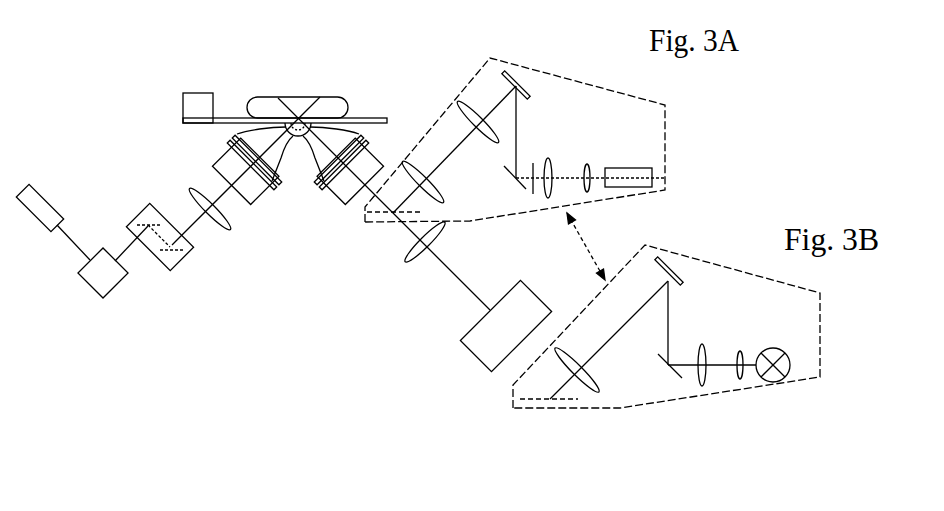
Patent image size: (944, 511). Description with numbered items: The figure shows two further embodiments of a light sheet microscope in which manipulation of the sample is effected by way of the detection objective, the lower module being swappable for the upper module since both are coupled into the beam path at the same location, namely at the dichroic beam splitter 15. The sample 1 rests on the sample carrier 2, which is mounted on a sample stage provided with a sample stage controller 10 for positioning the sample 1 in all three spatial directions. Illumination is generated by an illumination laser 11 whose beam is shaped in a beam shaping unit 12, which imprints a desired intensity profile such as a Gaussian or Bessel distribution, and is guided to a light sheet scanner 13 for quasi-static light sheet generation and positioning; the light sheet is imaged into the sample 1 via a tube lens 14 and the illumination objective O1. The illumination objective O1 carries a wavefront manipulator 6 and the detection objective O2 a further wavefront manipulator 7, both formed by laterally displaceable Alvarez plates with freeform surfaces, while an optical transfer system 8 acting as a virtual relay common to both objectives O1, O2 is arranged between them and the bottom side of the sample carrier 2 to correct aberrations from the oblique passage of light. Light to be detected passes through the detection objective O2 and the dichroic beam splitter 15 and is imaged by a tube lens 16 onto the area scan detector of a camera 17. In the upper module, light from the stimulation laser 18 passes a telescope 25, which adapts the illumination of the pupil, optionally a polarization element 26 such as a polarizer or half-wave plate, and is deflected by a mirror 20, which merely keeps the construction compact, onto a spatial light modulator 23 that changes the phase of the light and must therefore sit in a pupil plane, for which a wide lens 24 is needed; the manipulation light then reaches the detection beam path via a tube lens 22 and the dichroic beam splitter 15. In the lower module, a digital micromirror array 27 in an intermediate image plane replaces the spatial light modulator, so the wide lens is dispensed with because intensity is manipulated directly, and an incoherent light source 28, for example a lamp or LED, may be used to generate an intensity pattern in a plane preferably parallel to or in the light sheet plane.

In FIG. 3A, the sample 1 is at (326, 100).
In FIG. 3A, the sample carrier 2 is at (372, 118).
In FIG. 3A, the wavefront manipulator 6 is at (233, 144).
In FIG. 3A, the further wavefront manipulator 7 is at (340, 168).
In FIG. 3A, the optical transfer system 8 is at (298, 134).
In FIG. 3A, the sample stage controller 10 is at (200, 93).
In FIG. 3A, the illumination laser 11 is at (40, 200).
In FIG. 3A, the beam shaping unit 12 is at (110, 282).
In FIG. 3A, the light sheet scanner 13 is at (178, 258).
In FIG. 3A, the tube lens 14 is at (193, 190).
In FIG. 3A, the dichroic beam splitter 15 is at (389, 215).
In FIG. 3B, the dichroic beam splitter 15 is at (535, 400).
In FIG. 3A, the tube lens 16 is at (420, 253).
In FIG. 3A, the camera 17 is at (482, 353).
In FIG. 3A, the stimulation laser 18 is at (650, 178).
In FIG. 3A, the mirror 20 is at (526, 189).
In FIG. 3B, the mirror 20 is at (673, 380).
In FIG. 3A, the tube lens 22 is at (414, 160).
In FIG. 3B, the tube lens 22 is at (598, 395).
In FIG. 3A, the spatial light modulator 23 is at (505, 73).
In FIG. 3A, the wide lens 24 is at (468, 100).
In FIG. 3A, the telescope 25 is at (543, 155).
In FIG. 3B, the telescope 25 is at (693, 342).
In FIG. 3A, the polarization element 26 is at (534, 163).
In FIG. 3B, the digital micromirror array 27 is at (680, 272).
In FIG. 3B, the incoherent light source 28 is at (768, 380).
In FIG. 3A, the illumination objective O1 is at (247, 193).
In FIG. 3A, the detection objective O2 is at (349, 193).